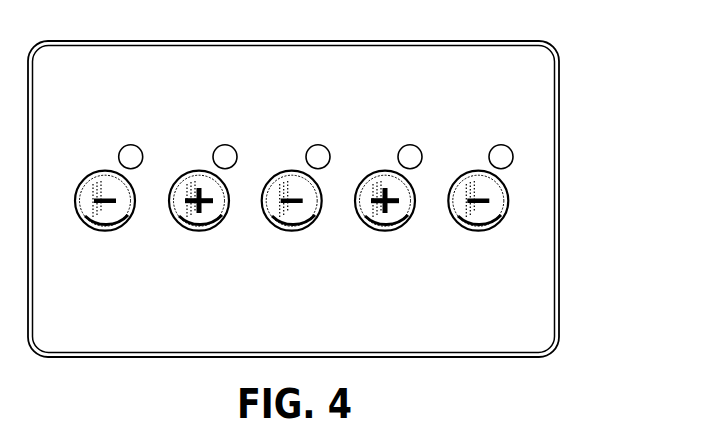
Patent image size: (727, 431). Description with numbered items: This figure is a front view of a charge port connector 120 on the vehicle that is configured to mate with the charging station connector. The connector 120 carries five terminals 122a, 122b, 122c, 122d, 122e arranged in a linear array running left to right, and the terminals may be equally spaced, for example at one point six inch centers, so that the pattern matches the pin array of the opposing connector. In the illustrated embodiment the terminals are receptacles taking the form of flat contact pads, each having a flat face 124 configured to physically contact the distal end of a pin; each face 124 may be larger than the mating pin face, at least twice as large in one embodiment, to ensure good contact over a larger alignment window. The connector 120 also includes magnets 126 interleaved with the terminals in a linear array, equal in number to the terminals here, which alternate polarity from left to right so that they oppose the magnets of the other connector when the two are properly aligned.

The charge port connector 120 is at (567, 40).
The terminal 122a is at (128, 142).
The terminal 122b is at (225, 145).
The terminal 122c is at (318, 145).
The terminal 122d is at (411, 145).
The terminal 122e is at (504, 145).
The flat face 124 is at (213, 157).
The magnet 126 is at (478, 232).